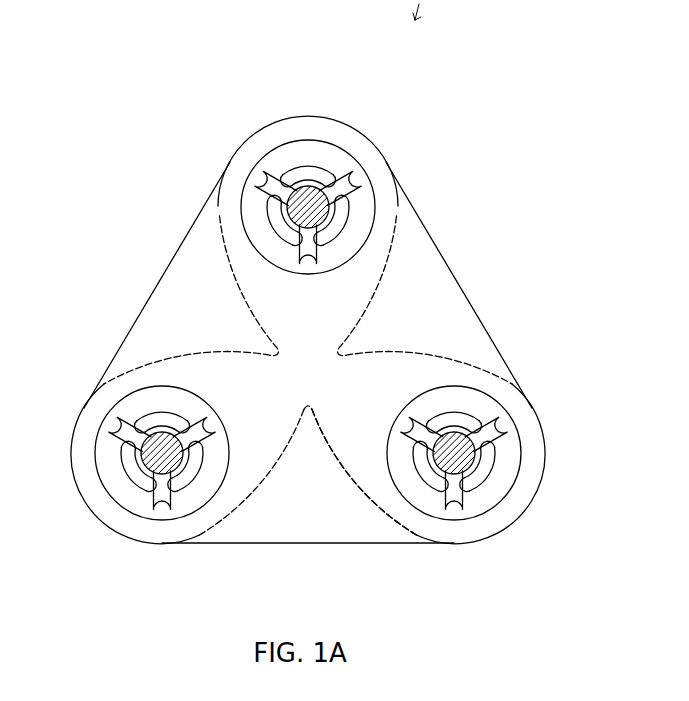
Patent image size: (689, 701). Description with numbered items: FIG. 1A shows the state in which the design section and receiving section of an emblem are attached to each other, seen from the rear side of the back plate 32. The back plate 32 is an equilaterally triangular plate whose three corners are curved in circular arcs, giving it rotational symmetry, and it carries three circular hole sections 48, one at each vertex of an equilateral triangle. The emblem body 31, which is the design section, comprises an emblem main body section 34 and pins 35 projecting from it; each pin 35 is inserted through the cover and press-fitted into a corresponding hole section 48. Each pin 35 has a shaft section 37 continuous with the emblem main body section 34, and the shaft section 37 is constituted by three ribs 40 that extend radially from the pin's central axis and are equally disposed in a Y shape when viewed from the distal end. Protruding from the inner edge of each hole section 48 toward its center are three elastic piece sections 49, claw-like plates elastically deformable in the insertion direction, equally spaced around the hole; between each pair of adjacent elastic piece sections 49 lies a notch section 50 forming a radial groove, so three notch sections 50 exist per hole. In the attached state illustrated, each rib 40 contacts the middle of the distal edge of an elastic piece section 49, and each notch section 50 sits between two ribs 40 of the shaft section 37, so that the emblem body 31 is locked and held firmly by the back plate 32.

The emblem body 31 is at (381, 287).
The back plate 32 is at (479, 310).
The emblem main body section 34 is at (347, 482).
The pin 35 is at (331, 178).
The shaft section 37 is at (318, 189).
The rib 40 is at (290, 180).
The hole section 48 is at (398, 234).
The elastic piece section 49 is at (307, 192).
The notch section 50 is at (336, 186).